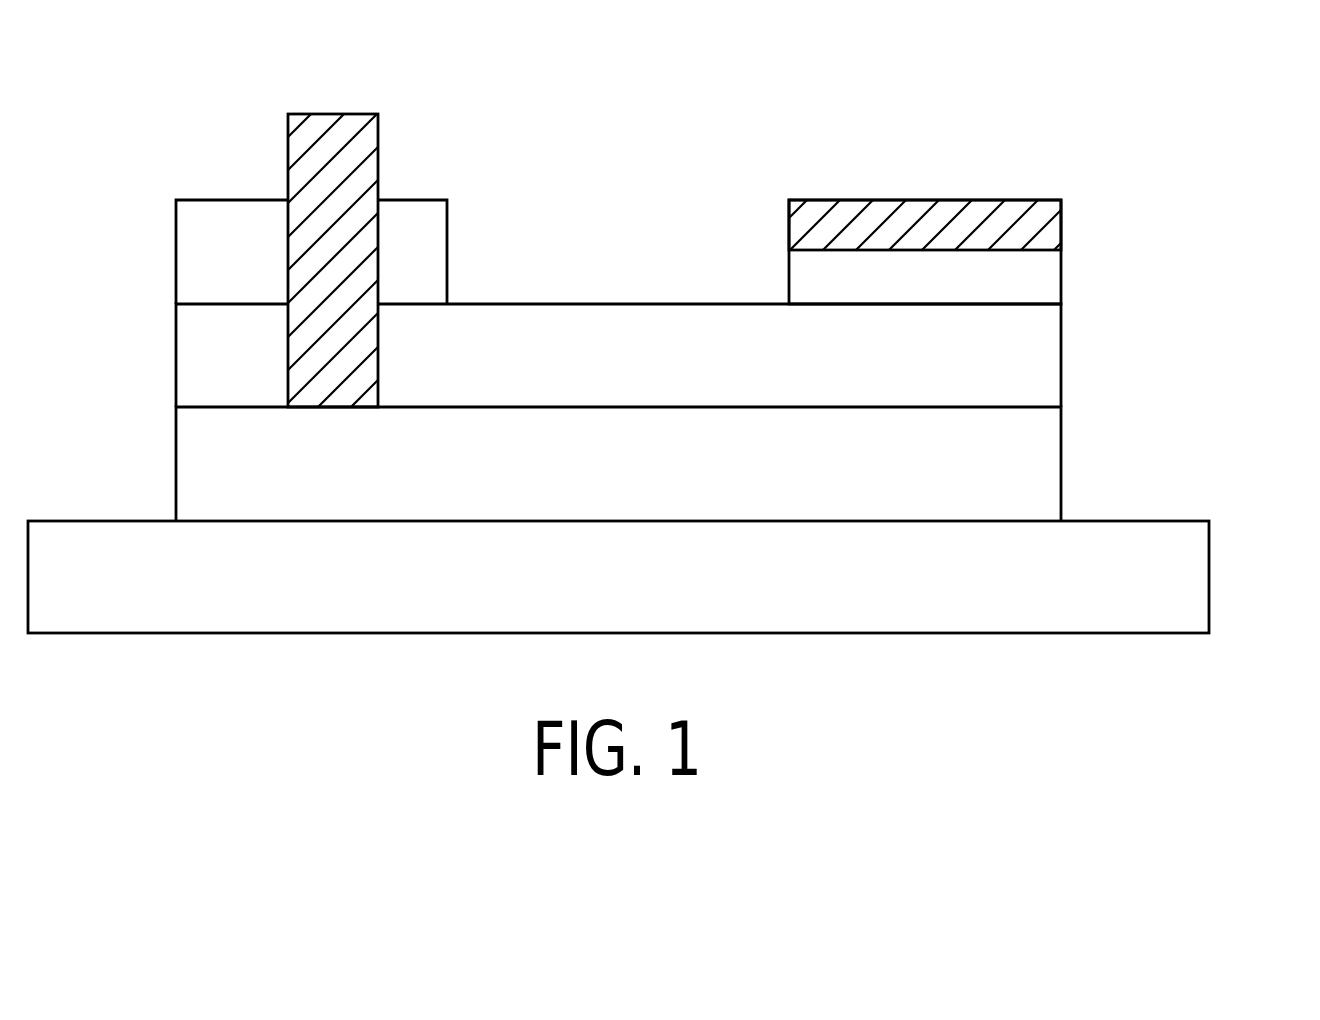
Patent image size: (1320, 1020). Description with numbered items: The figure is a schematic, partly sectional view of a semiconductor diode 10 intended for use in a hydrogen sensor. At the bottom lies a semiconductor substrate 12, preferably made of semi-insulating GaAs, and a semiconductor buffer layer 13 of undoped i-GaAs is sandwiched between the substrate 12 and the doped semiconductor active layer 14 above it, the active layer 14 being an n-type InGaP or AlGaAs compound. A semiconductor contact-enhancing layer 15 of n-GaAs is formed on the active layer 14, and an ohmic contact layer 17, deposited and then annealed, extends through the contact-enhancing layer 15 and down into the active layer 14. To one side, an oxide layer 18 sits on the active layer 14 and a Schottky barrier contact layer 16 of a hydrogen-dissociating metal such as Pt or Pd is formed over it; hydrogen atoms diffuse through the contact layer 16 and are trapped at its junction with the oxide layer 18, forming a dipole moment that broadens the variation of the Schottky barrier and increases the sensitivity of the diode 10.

The semiconductor diode 10 is at (883, 118).
The semiconductor substrate 12 is at (1185, 598).
The semiconductor buffer layer 13 is at (1047, 480).
The doped semiconductor active layer 14 is at (1025, 365).
The semiconductor contact-enhancing layer 15 is at (190, 221).
The Schottky barrier contact layer 16 is at (972, 218).
The ohmic contact layer 17 is at (360, 168).
The oxide layer 18 is at (1040, 287).